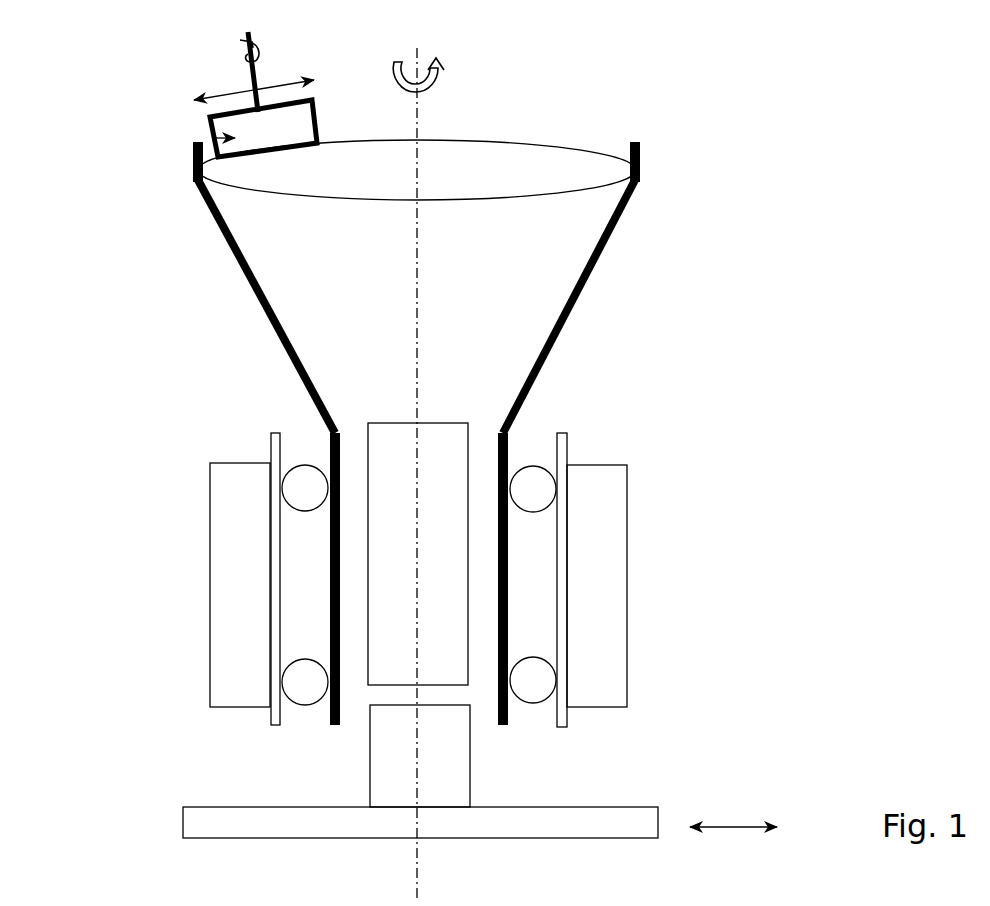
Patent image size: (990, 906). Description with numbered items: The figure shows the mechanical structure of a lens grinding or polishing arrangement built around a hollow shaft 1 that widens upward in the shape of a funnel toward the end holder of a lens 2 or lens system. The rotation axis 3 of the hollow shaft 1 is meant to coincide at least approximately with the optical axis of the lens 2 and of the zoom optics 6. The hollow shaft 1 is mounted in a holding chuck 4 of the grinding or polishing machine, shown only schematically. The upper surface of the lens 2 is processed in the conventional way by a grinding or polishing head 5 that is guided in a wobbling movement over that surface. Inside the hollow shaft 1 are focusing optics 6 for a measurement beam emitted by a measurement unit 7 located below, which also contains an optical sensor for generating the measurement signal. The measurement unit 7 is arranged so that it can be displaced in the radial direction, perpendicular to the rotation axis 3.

The hollow shaft 1 is at (508, 424).
The lens 2 is at (571, 145).
The rotation axis 3 is at (419, 45).
The holding chuck 4 is at (630, 581).
The grinding or polishing head 5 is at (203, 146).
The focusing optics 6 is at (418, 421).
The measurement unit 7 is at (423, 805).